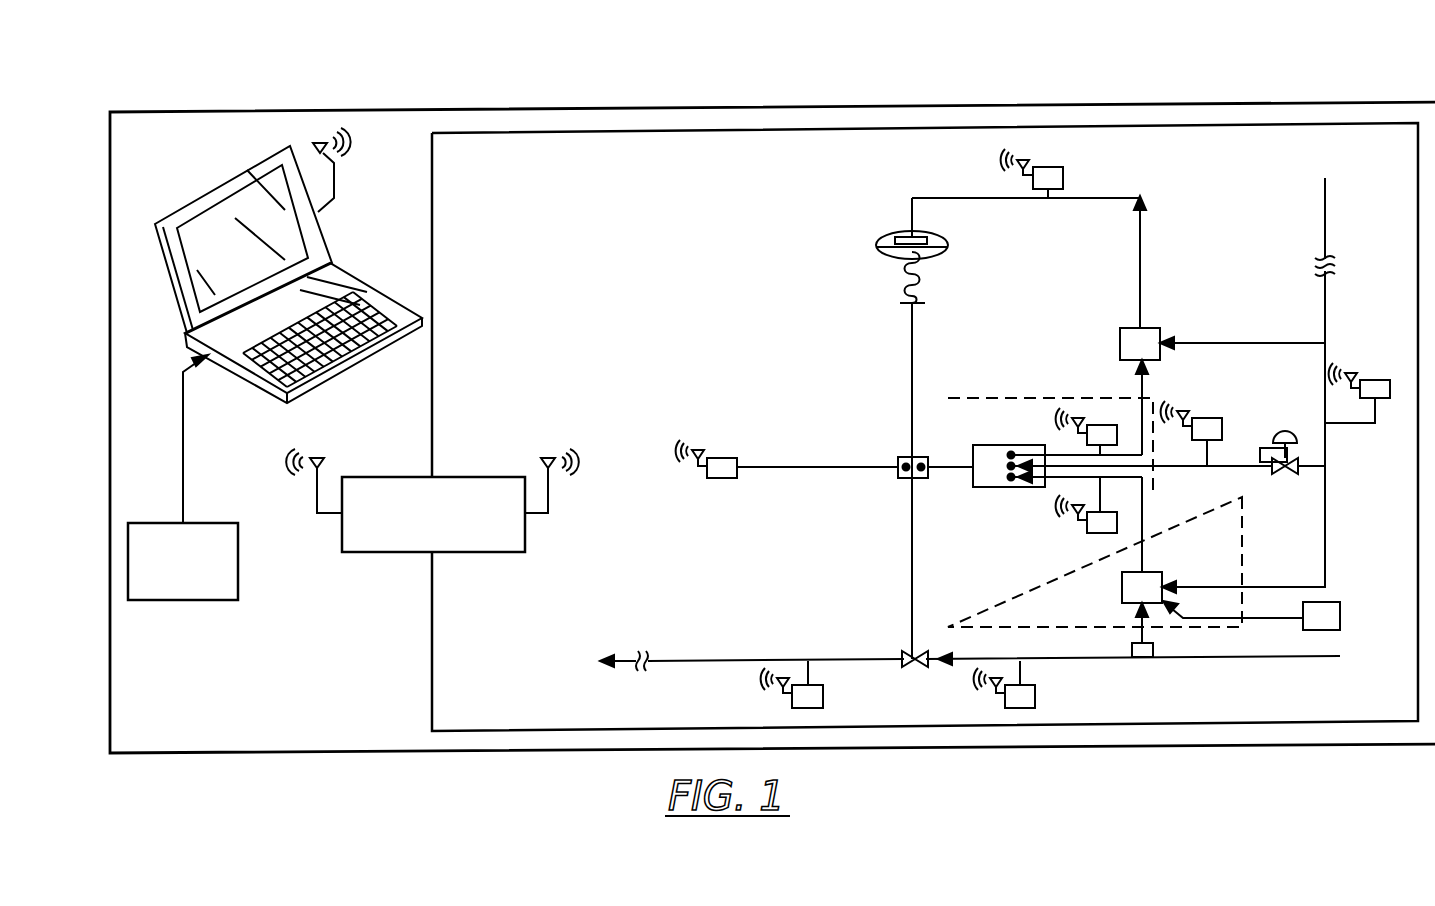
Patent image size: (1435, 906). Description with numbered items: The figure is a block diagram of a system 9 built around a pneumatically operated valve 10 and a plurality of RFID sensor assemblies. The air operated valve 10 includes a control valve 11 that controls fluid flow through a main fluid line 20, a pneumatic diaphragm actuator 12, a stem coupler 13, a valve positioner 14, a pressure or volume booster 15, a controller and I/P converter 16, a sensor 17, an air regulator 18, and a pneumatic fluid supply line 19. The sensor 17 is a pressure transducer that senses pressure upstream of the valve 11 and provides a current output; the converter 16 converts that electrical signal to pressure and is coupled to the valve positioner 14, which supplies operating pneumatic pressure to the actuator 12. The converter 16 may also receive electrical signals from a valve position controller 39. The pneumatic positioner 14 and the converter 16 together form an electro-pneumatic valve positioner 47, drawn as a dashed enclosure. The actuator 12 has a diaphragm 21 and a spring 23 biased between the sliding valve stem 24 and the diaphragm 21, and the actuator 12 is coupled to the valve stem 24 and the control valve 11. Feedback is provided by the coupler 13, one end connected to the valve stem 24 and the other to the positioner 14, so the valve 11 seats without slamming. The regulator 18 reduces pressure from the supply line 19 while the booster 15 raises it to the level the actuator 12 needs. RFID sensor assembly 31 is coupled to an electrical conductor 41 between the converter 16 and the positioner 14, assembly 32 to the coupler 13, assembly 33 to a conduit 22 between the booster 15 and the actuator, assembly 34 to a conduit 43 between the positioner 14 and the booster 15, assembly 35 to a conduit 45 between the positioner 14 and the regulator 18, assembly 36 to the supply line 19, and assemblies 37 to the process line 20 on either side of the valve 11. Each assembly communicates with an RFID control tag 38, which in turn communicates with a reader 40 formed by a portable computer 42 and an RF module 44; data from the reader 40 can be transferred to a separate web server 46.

The system 9 is at (703, 86).
The pneumatically operated valve 10 is at (790, 337).
The control valve 11 is at (910, 652).
The pneumatic diaphragm actuator 12 is at (890, 232).
The stem coupler 13 is at (905, 457).
The valve positioner 14 is at (1017, 444).
The pressure or volume booster 15 is at (1126, 330).
The I/P converter 16 is at (1121, 590).
The sensor 17 is at (1131, 650).
The air regulator 18 is at (1287, 438).
The pneumatic fluid supply line 19 is at (1322, 305).
The main fluid line 20 is at (704, 665).
The diaphragm 21 is at (893, 253).
The conduit 22 is at (1112, 197).
The spring 23 is at (920, 290).
The valve stem 24 is at (910, 347).
The RFID sensor assembly 31 is at (1100, 533).
The RFID sensor assembly 32 is at (728, 458).
The RFID sensor assembly 33 is at (1058, 168).
The RFID sensor assembly 34 is at (1103, 425).
The RFID sensor assembly 35 is at (1212, 418).
The RFID sensor assembly 36 is at (1378, 380).
The RFID sensor assemblies 37 is at (795, 701).
The RFID control tag 38 is at (483, 477).
The valve position controller 39 is at (1340, 615).
The reader 40 is at (370, 389).
The electrical conductor 41 is at (1146, 538).
The portable computer 42 is at (240, 372).
The conduit 43 is at (1160, 386).
The RF receiver or module 44 is at (334, 180).
The conduit 45 is at (1240, 468).
The web server 46 is at (238, 556).
The electro-pneumatic valve positioner 47 is at (1010, 392).